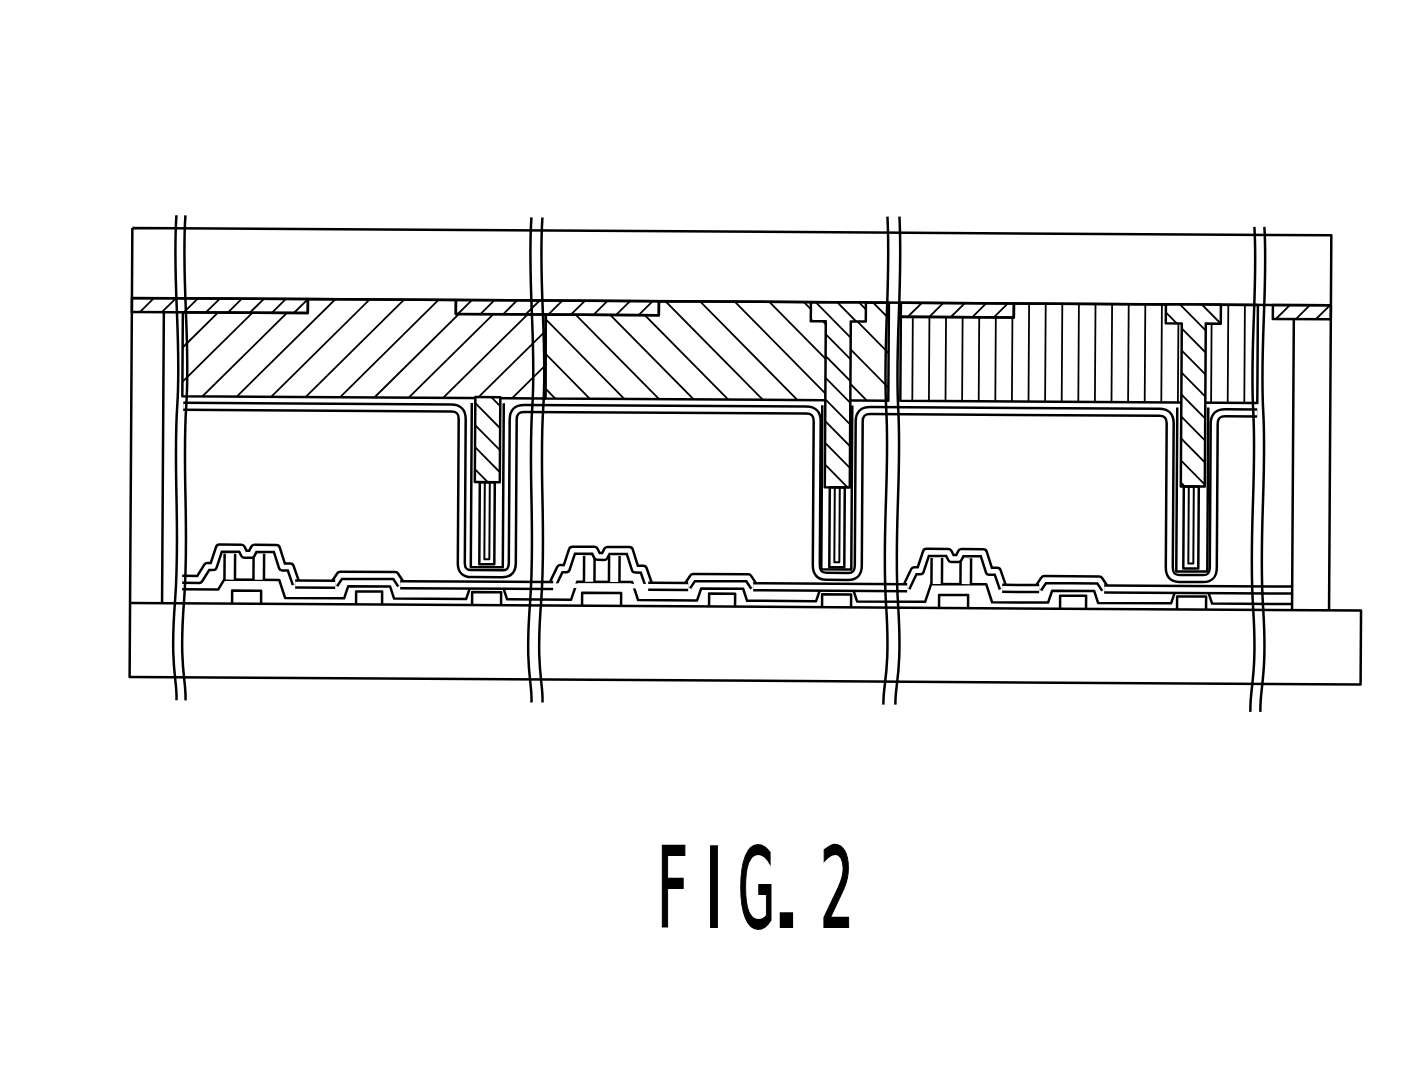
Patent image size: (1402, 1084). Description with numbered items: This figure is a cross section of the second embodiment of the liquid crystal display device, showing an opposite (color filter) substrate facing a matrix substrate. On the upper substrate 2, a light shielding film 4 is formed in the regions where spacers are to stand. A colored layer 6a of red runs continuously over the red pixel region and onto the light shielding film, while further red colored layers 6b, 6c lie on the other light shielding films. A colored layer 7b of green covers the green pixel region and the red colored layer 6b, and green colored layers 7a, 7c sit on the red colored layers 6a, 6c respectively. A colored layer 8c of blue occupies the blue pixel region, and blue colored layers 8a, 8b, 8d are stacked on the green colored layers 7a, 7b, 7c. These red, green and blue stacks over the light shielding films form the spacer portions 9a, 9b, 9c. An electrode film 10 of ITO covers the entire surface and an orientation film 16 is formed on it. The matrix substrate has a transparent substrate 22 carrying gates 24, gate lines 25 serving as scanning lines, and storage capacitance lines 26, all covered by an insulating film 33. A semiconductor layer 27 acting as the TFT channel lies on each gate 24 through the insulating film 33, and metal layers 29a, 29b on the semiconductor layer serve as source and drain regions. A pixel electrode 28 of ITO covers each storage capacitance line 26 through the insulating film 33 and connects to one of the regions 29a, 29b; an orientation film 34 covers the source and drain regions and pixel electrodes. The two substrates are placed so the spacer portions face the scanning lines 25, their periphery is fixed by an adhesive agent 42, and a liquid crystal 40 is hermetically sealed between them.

The substrate 2 is at (1296, 250).
The light shielding film 4 is at (957, 312).
The colored layer of red 6a is at (331, 325).
The colored layer of red 6b is at (851, 330).
The colored layer of red 6c is at (1190, 333).
The colored layer of green 7a is at (489, 400).
The colored layer of green 7b is at (758, 310).
The colored layer of green 7c is at (1190, 452).
The colored layer of blue 8a is at (484, 540).
The colored layer of blue 8b is at (833, 572).
The colored layer of blue 8c is at (1073, 312).
The colored layer of blue 8d is at (1190, 575).
The spacer portion 9a is at (455, 482).
The spacer portion 9b is at (673, 646).
The spacer portion 9c is at (1031, 655).
The electrode film 10 is at (668, 398).
The orientation film 16 is at (596, 413).
The transparent substrate 22 is at (1318, 674).
The gate 24 is at (603, 603).
The gate line 25 is at (840, 604).
The storage capacitance line 26 is at (712, 604).
The semiconductor layer 27 is at (573, 600).
The pixel electrode 28 is at (660, 600).
The metal layer 29a is at (191, 590).
The metal layer 29b is at (279, 592).
The insulating film 33 is at (986, 612).
The orientation film 34 is at (338, 598).
The liquid crystal 40 is at (1029, 556).
The adhesive agent 42 is at (1340, 495).